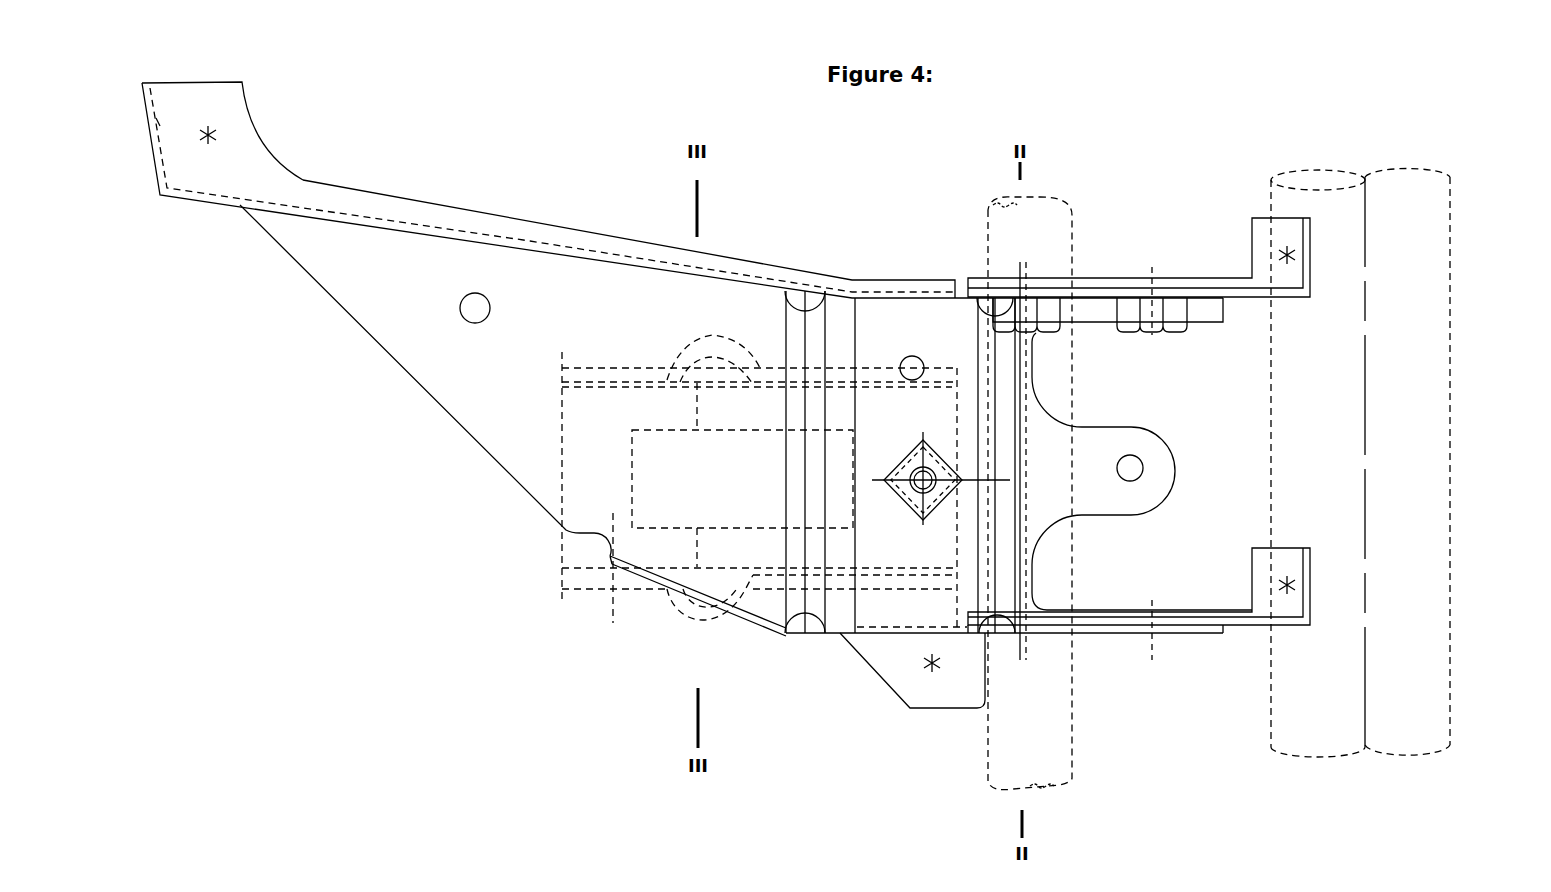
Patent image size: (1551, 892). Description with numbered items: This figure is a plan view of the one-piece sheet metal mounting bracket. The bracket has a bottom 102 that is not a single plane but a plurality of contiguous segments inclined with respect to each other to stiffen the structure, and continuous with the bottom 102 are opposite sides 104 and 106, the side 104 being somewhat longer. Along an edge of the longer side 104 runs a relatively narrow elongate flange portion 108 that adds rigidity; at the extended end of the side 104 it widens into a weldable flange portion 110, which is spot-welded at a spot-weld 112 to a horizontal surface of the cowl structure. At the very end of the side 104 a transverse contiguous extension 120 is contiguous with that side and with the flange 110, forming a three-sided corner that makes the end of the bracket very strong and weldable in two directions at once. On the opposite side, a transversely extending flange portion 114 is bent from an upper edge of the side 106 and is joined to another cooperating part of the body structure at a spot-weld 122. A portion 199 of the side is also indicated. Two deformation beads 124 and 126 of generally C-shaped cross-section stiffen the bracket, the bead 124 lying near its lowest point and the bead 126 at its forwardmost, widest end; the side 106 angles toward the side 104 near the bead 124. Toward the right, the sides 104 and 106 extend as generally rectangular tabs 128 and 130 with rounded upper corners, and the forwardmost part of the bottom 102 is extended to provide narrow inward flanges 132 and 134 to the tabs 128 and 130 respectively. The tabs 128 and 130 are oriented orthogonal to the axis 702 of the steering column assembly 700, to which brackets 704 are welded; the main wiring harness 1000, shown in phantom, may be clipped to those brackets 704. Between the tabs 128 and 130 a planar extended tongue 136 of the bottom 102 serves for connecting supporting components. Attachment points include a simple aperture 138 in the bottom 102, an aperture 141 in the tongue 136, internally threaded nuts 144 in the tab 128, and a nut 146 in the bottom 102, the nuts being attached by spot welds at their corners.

The bottom 102 is at (440, 362).
The side 104 is at (195, 200).
The side 106 is at (837, 635).
The flange portion 108 is at (445, 220).
The weldable flange portion 110 is at (227, 112).
The spot-weld 112 is at (215, 137).
The transversely extending flange portion 114 is at (937, 710).
The transverse contiguous extension 120 is at (158, 122).
The spot-weld 122 is at (932, 663).
The deformation bead 124 is at (800, 628).
The deformation bead 126 is at (993, 303).
The tab 128 is at (1103, 295).
The tab 130 is at (1205, 627).
The inward flange 132 is at (1103, 317).
The inward flange 134 is at (1093, 618).
The extended tongue 136 is at (1173, 450).
The aperture 138 is at (463, 308).
The aperture 141 is at (1130, 468).
The nut 144 is at (1050, 312).
The nut 146 is at (910, 443).
The portion of side 199 is at (660, 585).
The steering column assembly 700 is at (1450, 400).
The axis 702 is at (1365, 397).
The bracket 704 is at (1195, 277).
The main wiring harness 1000 is at (1000, 237).